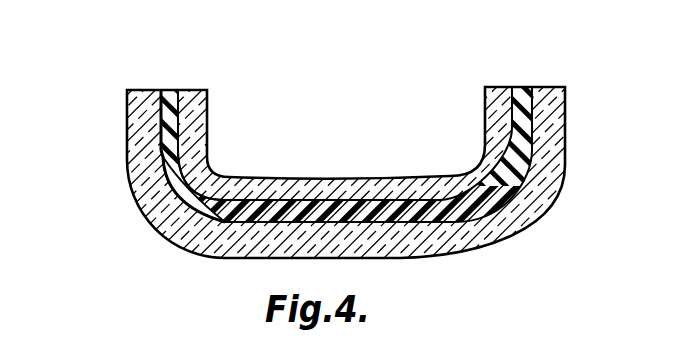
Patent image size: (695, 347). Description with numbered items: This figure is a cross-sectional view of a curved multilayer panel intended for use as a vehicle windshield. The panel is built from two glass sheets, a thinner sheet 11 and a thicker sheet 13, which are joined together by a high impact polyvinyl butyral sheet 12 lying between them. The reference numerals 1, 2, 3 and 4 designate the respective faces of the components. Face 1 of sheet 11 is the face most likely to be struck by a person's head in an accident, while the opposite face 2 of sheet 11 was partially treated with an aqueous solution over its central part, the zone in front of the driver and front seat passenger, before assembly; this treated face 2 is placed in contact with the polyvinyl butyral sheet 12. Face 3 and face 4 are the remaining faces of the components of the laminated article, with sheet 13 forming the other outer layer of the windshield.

The face 1 is at (484, 115).
The face 2 is at (503, 88).
The face 3 is at (534, 88).
The face 4 is at (567, 112).
The sheet 11 is at (204, 92).
The high impact polyvinyl butyral sheet 12 is at (168, 92).
The sheet 13 is at (143, 125).